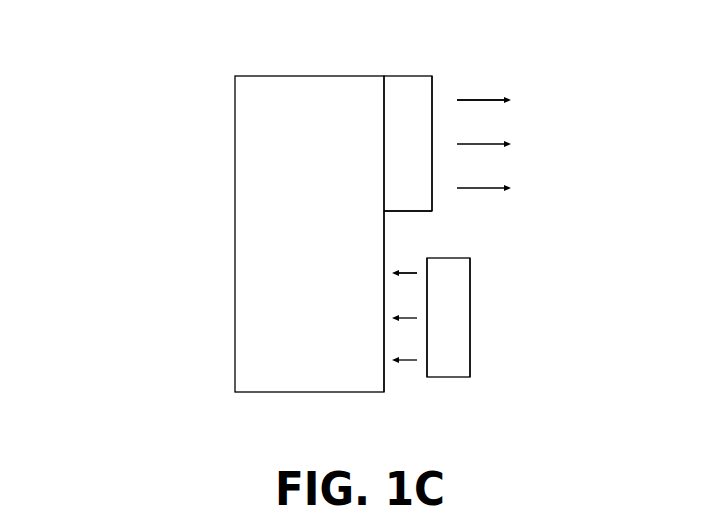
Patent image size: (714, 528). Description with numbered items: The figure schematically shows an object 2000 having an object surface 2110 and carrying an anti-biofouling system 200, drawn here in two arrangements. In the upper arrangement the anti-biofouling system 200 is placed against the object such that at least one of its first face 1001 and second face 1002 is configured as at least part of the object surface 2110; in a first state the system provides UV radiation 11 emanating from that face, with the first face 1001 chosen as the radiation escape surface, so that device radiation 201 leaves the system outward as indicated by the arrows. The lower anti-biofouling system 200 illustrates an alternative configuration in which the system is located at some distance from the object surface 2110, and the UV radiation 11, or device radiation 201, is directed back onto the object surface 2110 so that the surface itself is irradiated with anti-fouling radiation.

The object 2000 is at (127, 70).
The anti-biofouling system 200 is at (461, 47).
The device radiation 201 is at (487, 100).
The UV radiation 11 is at (498, 159).
The first face 1001 is at (433, 134).
The object surface 2110 is at (433, 210).
The second face 1002 is at (470, 293).